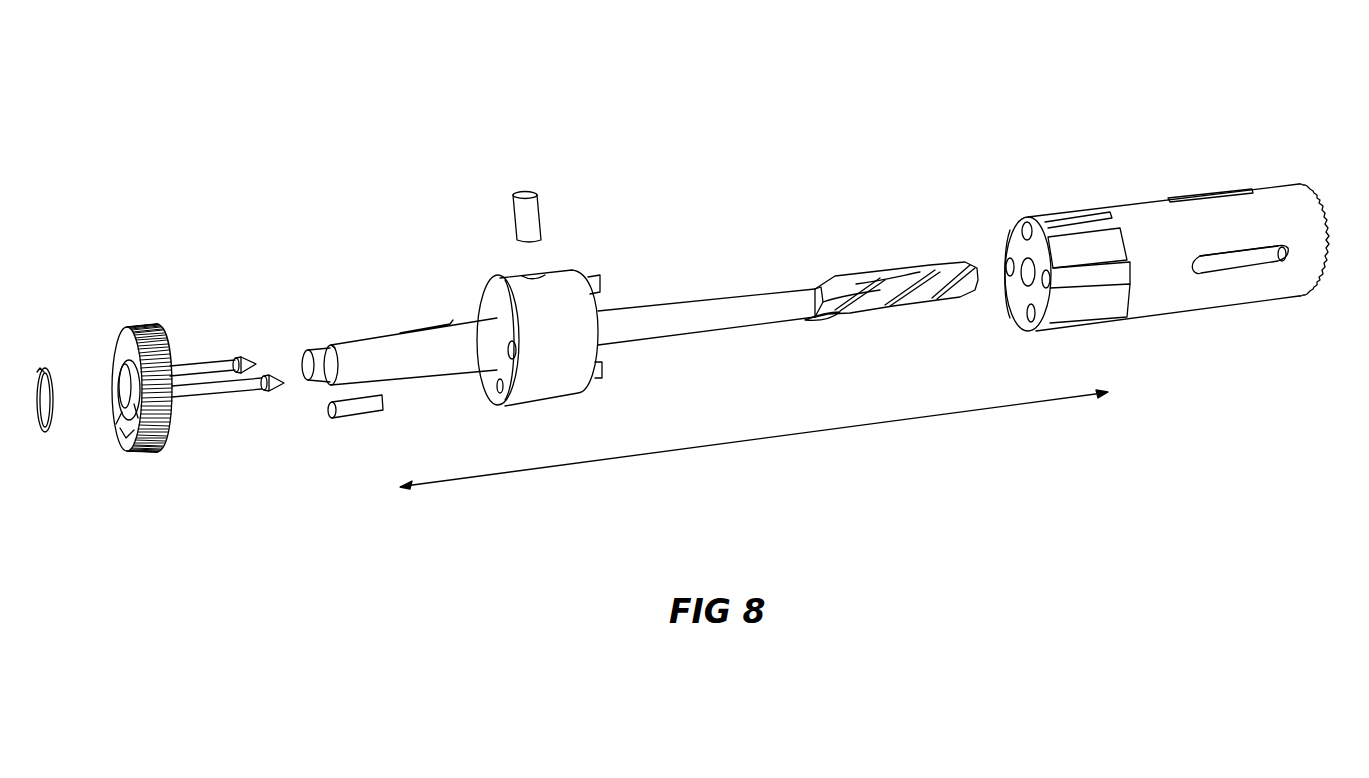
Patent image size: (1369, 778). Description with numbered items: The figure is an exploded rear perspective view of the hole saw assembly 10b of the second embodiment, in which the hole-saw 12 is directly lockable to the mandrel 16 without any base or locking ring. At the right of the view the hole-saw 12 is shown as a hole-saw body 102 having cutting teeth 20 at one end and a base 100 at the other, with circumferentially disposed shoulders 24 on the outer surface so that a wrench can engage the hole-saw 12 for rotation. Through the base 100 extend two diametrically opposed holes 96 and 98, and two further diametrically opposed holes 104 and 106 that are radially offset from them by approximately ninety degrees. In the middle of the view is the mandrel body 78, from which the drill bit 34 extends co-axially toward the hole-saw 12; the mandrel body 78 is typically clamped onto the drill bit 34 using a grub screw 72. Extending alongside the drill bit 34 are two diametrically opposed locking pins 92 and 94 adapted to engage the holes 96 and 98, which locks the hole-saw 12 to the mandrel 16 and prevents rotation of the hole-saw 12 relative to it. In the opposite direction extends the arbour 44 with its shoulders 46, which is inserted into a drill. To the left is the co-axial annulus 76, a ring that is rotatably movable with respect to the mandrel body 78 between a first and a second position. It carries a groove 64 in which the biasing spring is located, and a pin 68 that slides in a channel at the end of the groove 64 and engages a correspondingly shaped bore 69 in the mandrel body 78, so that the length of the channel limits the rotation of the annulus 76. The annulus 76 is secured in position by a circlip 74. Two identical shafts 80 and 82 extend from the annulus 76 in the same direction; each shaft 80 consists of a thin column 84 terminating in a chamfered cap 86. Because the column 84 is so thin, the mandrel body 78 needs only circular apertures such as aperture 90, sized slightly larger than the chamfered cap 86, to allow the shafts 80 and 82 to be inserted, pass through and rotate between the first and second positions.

The hole saw assembly 10b is at (887, 121).
The hole-saw 12 is at (1155, 190).
The mandrel 16 is at (580, 262).
The cutting teeth 20 is at (1325, 192).
The shoulders 24 is at (1095, 310).
The drill bit 34 is at (725, 317).
The arbour 44 is at (448, 333).
The shoulders 46 is at (355, 340).
The groove 64 is at (142, 446).
The pin 68 is at (350, 412).
The bore 69 is at (500, 392).
The grub screw 72 is at (535, 215).
The circlip 74 is at (47, 436).
The annulus 76 is at (122, 345).
The mandrel body 78 is at (565, 385).
The shaft 80 is at (199, 360).
The shaft 82 is at (207, 403).
The column 84 is at (233, 367).
The chamfered cap 86 is at (252, 372).
The circular aperture 90 is at (512, 345).
The locking pin 92 is at (600, 288).
The locking pin 94 is at (606, 377).
The hole 96 is at (1020, 226).
The hole 98 is at (1030, 330).
The base 100 is at (1016, 290).
The hole-saw body 102 is at (1168, 300).
The hole 104 is at (1005, 265).
The hole 106 is at (1050, 272).